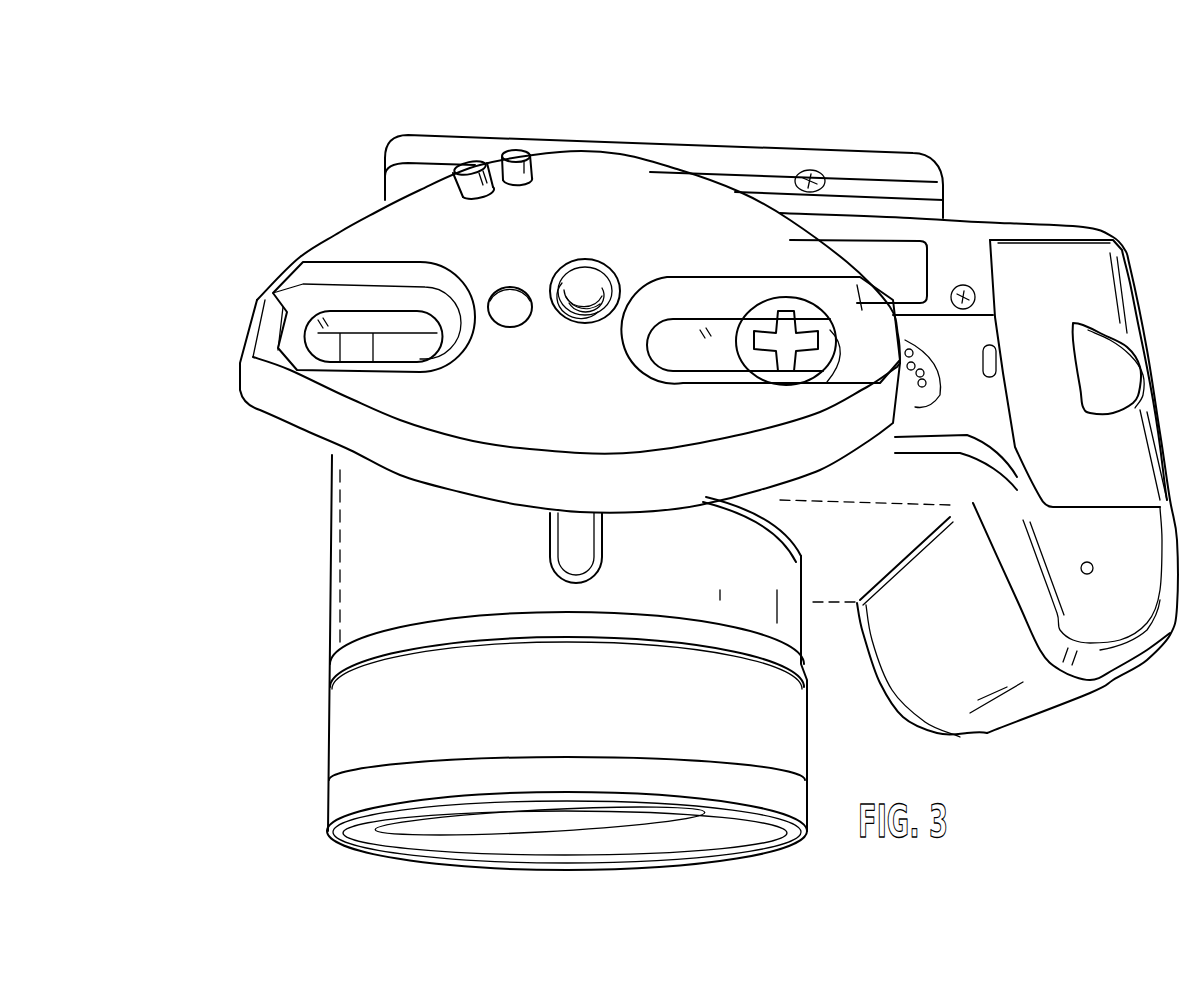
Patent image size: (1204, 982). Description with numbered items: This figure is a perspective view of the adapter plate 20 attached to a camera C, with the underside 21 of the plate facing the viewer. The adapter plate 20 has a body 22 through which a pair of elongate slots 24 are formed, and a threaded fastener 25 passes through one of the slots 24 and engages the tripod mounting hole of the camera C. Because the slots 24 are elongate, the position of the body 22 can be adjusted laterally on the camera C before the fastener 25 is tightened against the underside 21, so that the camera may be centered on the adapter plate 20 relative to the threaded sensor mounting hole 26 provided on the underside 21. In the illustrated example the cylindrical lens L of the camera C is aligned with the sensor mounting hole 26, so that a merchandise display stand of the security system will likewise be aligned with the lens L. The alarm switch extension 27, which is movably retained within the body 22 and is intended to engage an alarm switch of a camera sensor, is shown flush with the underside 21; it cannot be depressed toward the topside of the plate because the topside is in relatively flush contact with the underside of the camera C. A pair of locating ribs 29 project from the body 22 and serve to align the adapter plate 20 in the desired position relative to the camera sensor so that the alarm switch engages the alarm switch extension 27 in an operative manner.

The adapter plate 20 is at (558, 298).
The underside 21 is at (441, 411).
The body 22 is at (253, 387).
The elongate slots 24 is at (337, 333).
The threaded fastener 25 is at (815, 335).
The threaded sensor mounting hole 26 is at (596, 290).
The alarm switch extension 27 is at (504, 300).
The locating ribs 29 is at (470, 165).
The camera C is at (1027, 225).
The cylindrical lens L is at (410, 717).